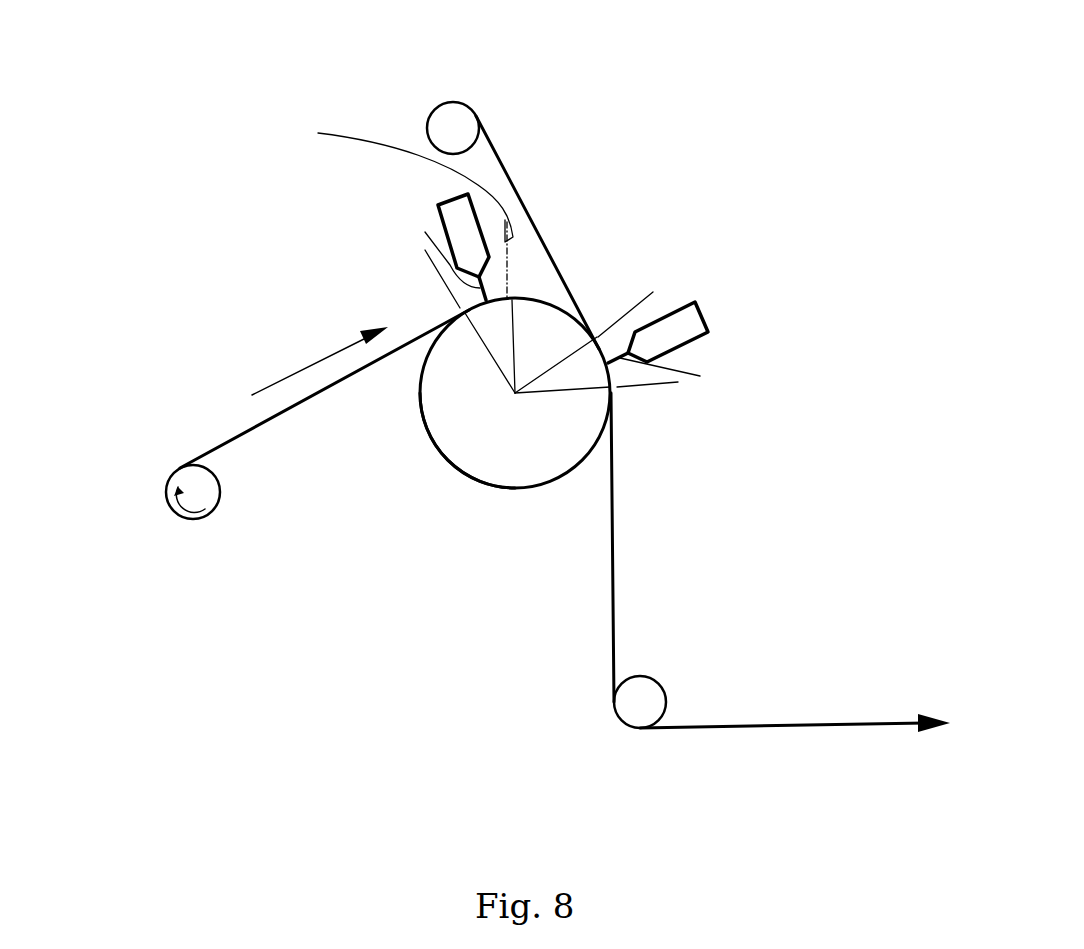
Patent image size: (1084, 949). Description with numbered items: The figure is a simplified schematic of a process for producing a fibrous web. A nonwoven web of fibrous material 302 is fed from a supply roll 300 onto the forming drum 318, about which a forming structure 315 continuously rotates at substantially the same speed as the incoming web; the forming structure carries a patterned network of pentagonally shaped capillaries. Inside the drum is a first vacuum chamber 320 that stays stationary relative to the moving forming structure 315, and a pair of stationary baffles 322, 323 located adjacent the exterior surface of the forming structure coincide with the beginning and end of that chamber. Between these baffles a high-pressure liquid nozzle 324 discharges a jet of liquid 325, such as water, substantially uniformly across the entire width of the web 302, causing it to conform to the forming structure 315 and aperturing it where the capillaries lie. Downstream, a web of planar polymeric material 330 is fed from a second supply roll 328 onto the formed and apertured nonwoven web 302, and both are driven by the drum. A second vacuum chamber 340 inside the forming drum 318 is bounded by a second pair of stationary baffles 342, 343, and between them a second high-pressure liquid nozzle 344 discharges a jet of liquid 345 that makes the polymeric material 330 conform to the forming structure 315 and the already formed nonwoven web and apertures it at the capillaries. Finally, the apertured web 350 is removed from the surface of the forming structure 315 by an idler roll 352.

The supply roll 300 is at (183, 517).
The nonwoven web of fibrous material 302 is at (247, 435).
The forming structure 315 is at (488, 487).
The forming drum 318 is at (463, 457).
The first vacuum chamber 320 is at (497, 370).
The stationary baffle 322 is at (443, 283).
The stationary baffle 323 is at (391, 208).
The high-pressure liquid nozzle 324 is at (440, 207).
The jet of liquid 325 is at (425, 232).
The supply roll 328 is at (460, 123).
The web of planar polymeric material 330 is at (502, 162).
The second vacuum chamber 340 is at (560, 393).
The stationary baffle 342 is at (618, 317).
The stationary baffle 343 is at (655, 385).
The high-pressure liquid nozzle 344 is at (693, 323).
The jet of liquid 345 is at (700, 376).
The apertured web 350 is at (613, 522).
The idler roll 352 is at (648, 693).